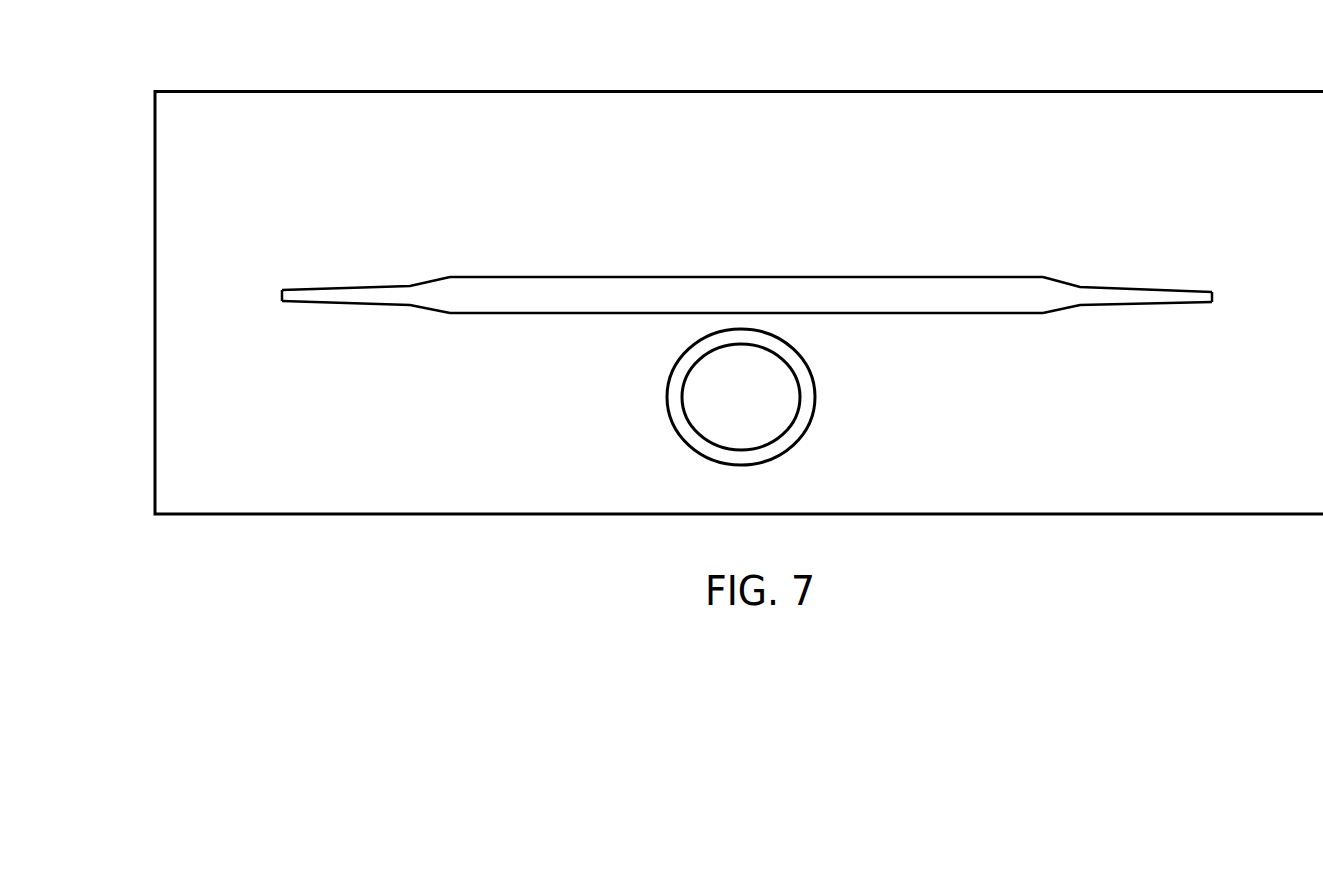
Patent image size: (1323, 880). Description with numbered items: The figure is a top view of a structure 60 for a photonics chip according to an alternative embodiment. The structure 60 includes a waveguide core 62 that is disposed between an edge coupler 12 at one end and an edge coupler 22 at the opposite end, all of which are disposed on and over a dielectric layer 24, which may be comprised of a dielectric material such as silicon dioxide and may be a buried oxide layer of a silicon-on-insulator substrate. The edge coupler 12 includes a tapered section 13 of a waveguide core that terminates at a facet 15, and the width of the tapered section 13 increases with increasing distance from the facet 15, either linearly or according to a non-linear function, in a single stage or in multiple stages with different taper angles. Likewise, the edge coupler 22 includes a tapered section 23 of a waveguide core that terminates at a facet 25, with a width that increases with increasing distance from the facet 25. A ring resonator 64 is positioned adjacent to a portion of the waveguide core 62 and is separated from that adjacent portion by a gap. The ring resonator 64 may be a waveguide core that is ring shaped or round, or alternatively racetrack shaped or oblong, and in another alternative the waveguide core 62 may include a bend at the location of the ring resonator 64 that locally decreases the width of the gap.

The structure 60 is at (165, 52).
The dielectric layer 24 is at (200, 472).
The waveguide core 62 is at (747, 290).
The edge coupler 12 is at (302, 262).
The tapered section 13 is at (348, 293).
The facet 15 is at (282, 297).
The edge coupler 22 is at (1182, 265).
The tapered section 23 is at (1135, 293).
The facet 25 is at (1212, 295).
The ring resonator 64 is at (680, 383).